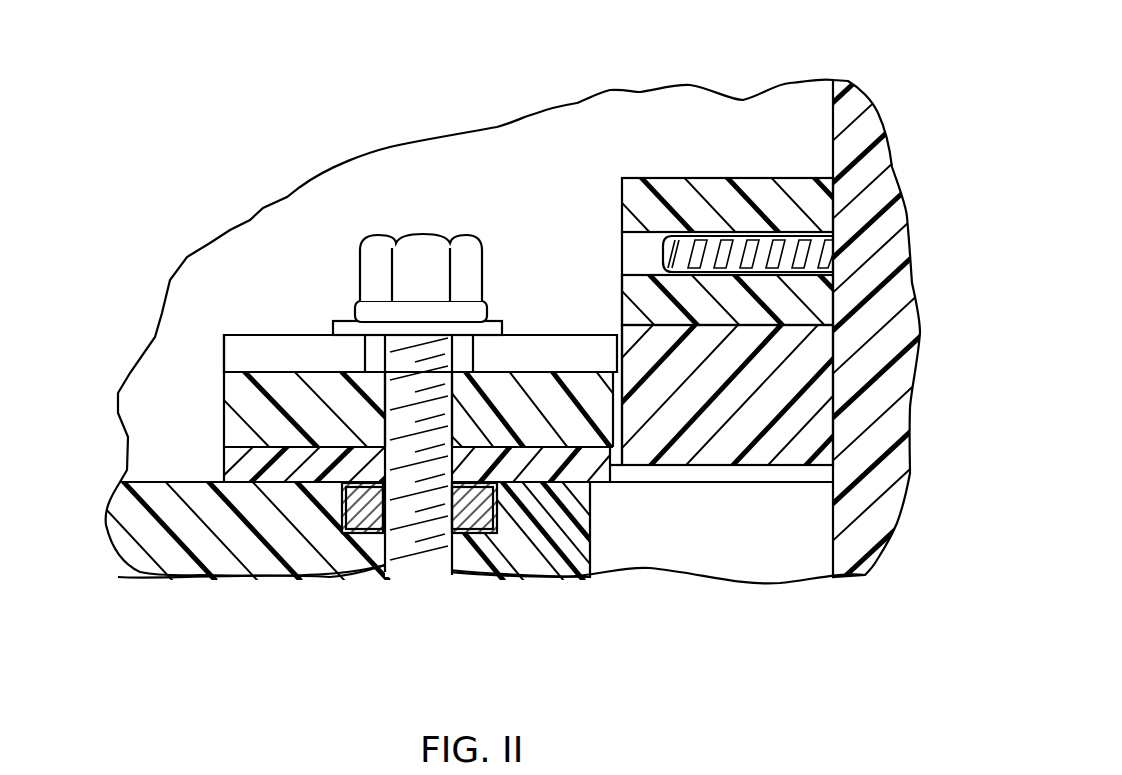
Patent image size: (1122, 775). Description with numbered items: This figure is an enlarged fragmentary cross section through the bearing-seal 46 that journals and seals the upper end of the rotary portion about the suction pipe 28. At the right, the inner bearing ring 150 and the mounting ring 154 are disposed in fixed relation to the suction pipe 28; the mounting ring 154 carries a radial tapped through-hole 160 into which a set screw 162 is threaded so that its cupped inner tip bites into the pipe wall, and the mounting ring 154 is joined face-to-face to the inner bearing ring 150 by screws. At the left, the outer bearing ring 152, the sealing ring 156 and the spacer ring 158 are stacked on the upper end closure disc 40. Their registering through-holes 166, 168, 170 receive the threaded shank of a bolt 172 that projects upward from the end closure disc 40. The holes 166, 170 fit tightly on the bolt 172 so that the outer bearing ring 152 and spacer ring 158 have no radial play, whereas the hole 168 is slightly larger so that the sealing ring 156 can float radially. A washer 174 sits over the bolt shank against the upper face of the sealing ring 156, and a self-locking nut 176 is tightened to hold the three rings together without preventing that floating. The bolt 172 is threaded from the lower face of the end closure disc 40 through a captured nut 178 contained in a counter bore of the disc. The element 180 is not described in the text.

The suction pipe 28 is at (878, 113).
The upper end closure disc 40 is at (182, 558).
The bearing-seal 46 is at (543, 183).
The inner bearing ring 150 is at (750, 453).
The outer bearing ring 152 is at (240, 387).
The mounting ring 154 is at (760, 185).
The sealing ring 156 is at (292, 334).
The spacer ring 158 is at (317, 465).
The radial tapped through-hole 160 is at (636, 236).
The set screw 162 is at (700, 248).
The through-hole 166 is at (387, 428).
The through-hole 168 is at (368, 350).
The through-hole 170 is at (390, 470).
The bolt 172 is at (440, 563).
The washer 174 is at (505, 328).
The self-locking nut 176 is at (420, 250).
The captured nut 178 is at (497, 533).
The plate 180 is at (255, 348).